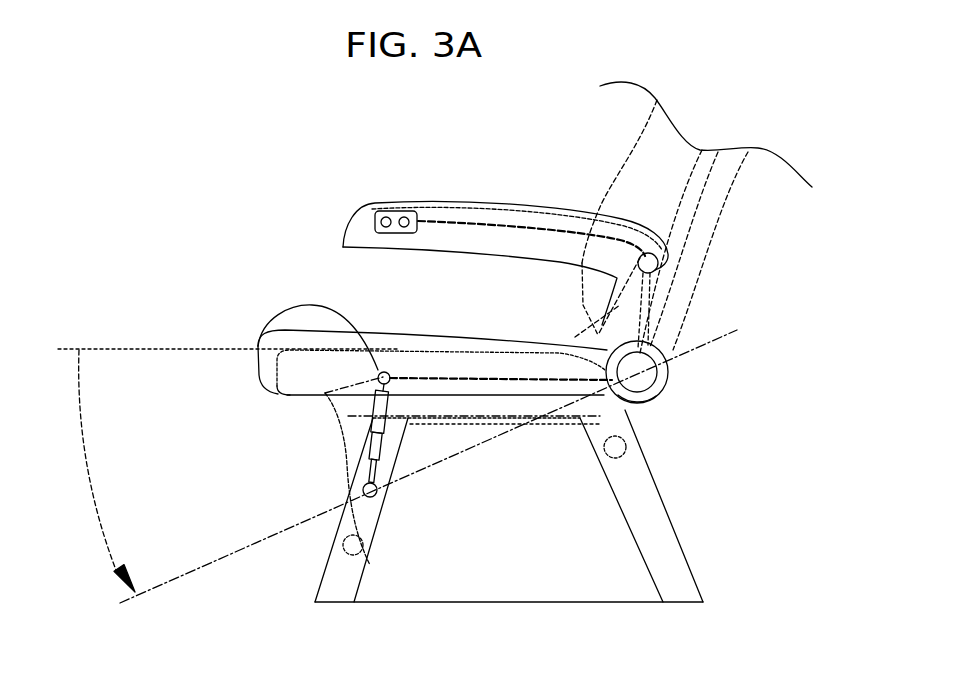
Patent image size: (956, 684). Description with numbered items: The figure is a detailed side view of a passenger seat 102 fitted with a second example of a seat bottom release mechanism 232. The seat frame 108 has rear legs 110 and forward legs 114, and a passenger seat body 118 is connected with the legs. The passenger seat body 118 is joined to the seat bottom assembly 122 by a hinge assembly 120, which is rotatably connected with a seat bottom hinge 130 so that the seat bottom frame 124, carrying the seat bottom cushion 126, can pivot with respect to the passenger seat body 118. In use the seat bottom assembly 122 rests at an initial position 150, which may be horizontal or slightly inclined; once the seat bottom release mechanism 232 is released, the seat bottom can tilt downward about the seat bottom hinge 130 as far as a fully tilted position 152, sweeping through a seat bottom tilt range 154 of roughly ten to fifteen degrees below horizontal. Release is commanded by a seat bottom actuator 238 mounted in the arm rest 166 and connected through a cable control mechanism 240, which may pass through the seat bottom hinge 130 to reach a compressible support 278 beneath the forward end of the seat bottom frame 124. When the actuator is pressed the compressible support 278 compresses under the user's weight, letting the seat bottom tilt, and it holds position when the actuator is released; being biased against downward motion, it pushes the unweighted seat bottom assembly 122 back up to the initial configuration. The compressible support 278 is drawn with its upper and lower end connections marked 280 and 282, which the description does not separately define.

The passenger seat 102 is at (208, 133).
The seat frame 108 is at (667, 502).
The rear legs 110 is at (652, 545).
The forward legs 114 is at (329, 565).
The passenger seat body 118 is at (668, 257).
The hinge assembly 120 is at (668, 390).
The seat bottom assembly 122 is at (248, 333).
The seat bottom frame 124 is at (290, 368).
The seat bottom cushion 126 is at (413, 333).
The seat bottom hinge 130 is at (648, 404).
The initial position 150 is at (170, 350).
The fully tilted position 152 is at (222, 557).
The seat bottom tilt range 154 is at (104, 471).
The arm rest 166 is at (527, 203).
The seat bottom release mechanism 232 is at (408, 453).
The seat bottom actuator 238 is at (400, 213).
The cable control mechanism 240 is at (480, 219).
The compressible support 278 is at (370, 422).
The upper joint 280 is at (378, 375).
The lower joint 282 is at (377, 494).